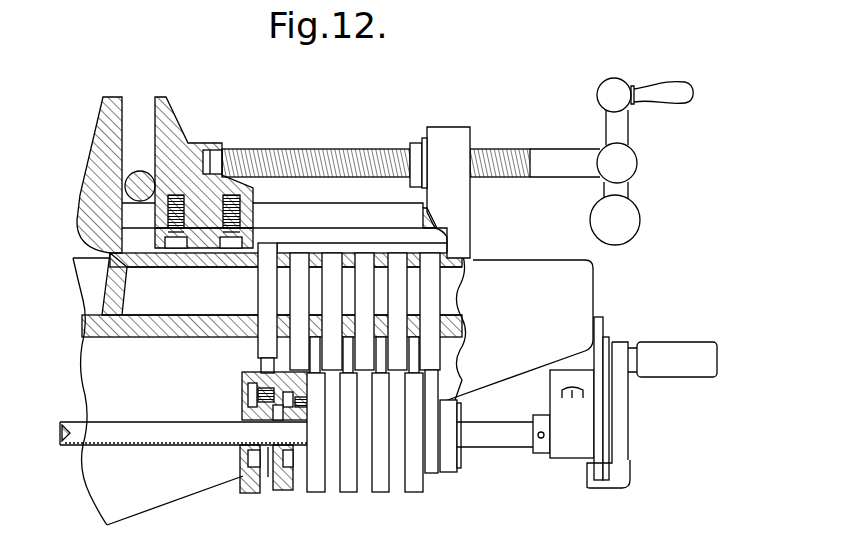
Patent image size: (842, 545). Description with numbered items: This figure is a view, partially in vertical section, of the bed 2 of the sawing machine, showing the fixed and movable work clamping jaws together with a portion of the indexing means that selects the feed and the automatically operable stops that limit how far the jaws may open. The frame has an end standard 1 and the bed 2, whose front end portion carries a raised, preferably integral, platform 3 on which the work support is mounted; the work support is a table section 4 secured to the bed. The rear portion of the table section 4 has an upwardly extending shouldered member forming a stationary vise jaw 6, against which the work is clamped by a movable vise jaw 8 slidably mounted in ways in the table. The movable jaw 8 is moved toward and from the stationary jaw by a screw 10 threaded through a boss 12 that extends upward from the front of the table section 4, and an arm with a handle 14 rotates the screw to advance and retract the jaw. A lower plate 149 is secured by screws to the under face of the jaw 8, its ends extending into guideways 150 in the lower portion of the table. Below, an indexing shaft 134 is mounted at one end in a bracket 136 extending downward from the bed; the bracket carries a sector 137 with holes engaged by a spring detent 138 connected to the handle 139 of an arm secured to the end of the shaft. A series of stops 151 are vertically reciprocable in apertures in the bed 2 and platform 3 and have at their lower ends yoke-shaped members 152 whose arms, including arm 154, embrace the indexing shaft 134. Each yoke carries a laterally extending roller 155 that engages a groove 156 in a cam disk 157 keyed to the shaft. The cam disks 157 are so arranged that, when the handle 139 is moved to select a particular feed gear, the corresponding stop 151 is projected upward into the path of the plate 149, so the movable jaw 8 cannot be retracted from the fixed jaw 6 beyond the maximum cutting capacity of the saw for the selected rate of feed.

The end standard 1 is at (107, 497).
The bed 2 is at (83, 352).
The platform 3 is at (183, 263).
The table section 4 is at (372, 209).
The stationary vise jaw 6 is at (97, 128).
The movable vise jaw 8 is at (180, 126).
The screw 10 is at (502, 148).
The boss 12 is at (452, 126).
The handle 14 is at (660, 89).
The indexing shaft 134 is at (157, 427).
The bracket 136 is at (577, 450).
The sector 137 is at (602, 318).
The spring detent 138 is at (608, 342).
The handle 139 is at (681, 347).
The lower plate 149 is at (258, 240).
The guideways 150 is at (322, 237).
The stop 151 is at (295, 289).
The yoke-shaped member 152 is at (261, 368).
The arm 154 is at (269, 468).
The roller 155 is at (253, 386).
The groove 156 is at (243, 479).
The cam disk 157 is at (248, 496).